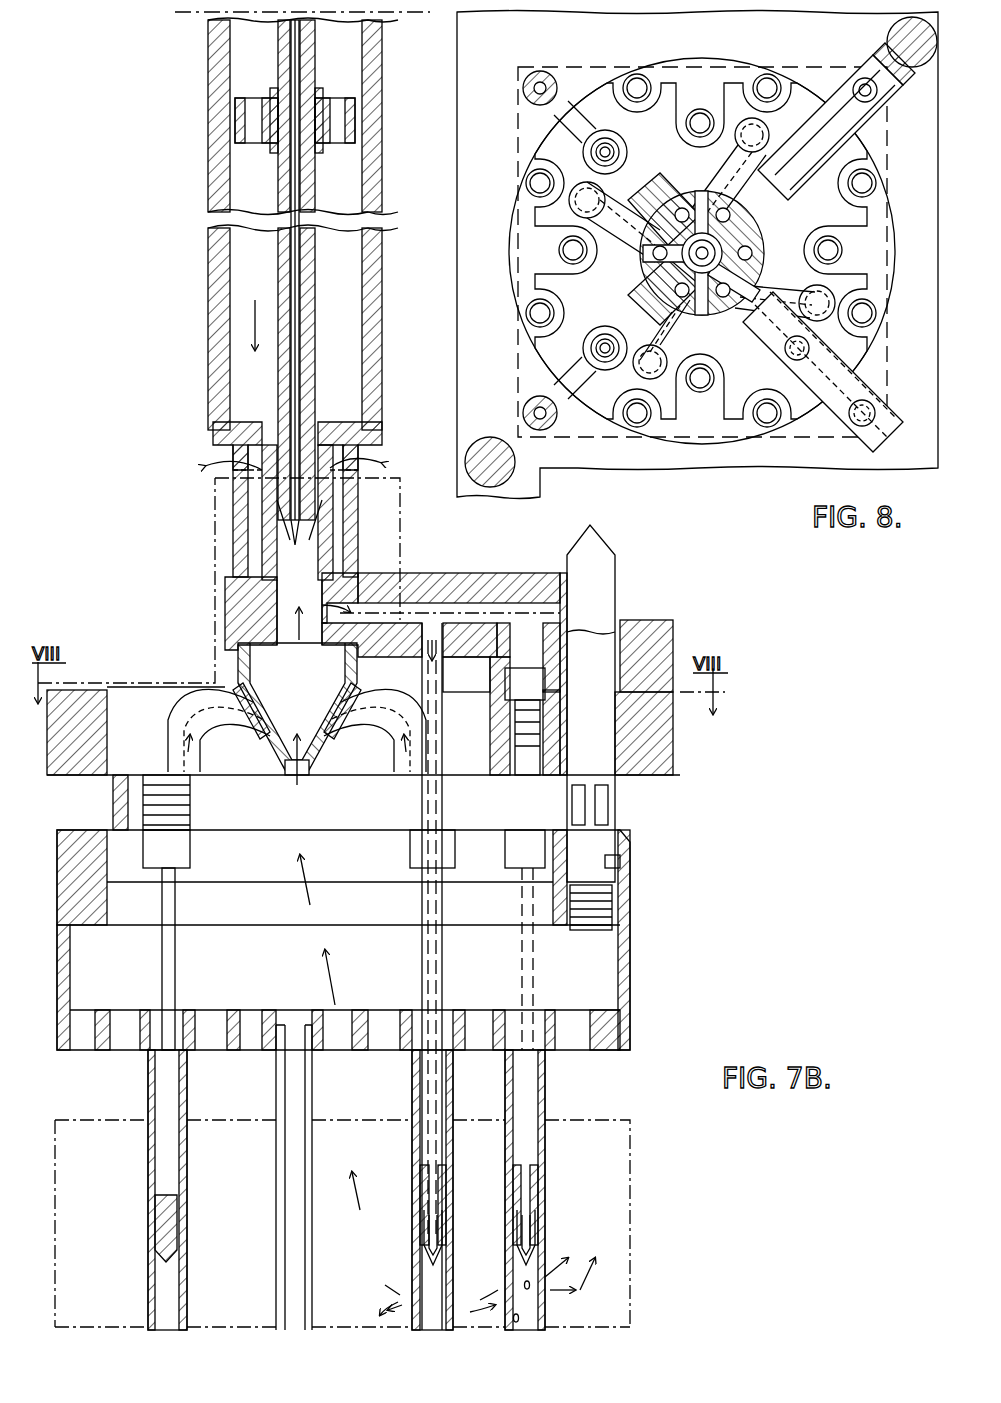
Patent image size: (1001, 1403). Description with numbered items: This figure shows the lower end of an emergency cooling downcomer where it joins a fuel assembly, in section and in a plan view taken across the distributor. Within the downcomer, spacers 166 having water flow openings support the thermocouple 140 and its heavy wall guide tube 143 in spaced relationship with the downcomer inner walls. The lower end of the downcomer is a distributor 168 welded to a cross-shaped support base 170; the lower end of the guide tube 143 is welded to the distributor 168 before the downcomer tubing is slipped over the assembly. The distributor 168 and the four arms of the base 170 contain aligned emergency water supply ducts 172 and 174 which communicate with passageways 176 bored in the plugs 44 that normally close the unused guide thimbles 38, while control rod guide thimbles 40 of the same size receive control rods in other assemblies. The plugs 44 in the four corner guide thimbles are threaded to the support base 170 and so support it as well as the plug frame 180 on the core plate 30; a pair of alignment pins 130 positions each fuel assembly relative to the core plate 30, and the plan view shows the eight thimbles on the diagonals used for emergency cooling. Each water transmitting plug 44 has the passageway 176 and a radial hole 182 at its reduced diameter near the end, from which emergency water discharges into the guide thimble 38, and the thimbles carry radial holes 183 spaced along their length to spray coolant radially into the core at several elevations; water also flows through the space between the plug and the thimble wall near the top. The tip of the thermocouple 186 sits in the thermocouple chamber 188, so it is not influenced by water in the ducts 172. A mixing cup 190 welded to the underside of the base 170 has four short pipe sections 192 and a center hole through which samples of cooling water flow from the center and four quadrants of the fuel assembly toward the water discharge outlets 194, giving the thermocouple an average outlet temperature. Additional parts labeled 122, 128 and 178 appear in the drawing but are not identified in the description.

In FIG. 7B, the core support plate 30 is at (660, 748).
In FIG. 7B, the guide thimbles 38 is at (187, 1150).
In FIG. 7B, the control rod guide thimbles 40 is at (443, 975).
In FIG. 7B, the plugs 44 is at (170, 1178).
In FIG. 7B, the outer tube 122 is at (382, 292).
In FIG. 7B, the flow 128 is at (548, 1273).
In FIG. 7B, the alignment pins 130 is at (605, 573).
In FIG. 8, the alignment pins 130 is at (890, 40).
In FIG. 7B, the thermocouple 140 is at (300, 60).
In FIG. 7B, the guide tube 143 is at (308, 195).
In FIG. 7B, the spacers 166 is at (355, 118).
In FIG. 7B, the distributor 168 is at (236, 456).
In FIG. 8, the distributor 168 is at (935, 347).
In FIG. 7B, the cross-shaped support base 170 is at (527, 575).
In FIG. 8, the cross-shaped support base 170 is at (885, 418).
In FIG. 7B, the emergency water supply ducts 172 is at (250, 430).
In FIG. 7B, the emergency water supply ducts 174 is at (440, 605).
In FIG. 7B, the passageways 176 is at (440, 672).
In FIG. 7B, the bolt 178 is at (505, 862).
In FIG. 7B, the plug frame 180 is at (113, 800).
In FIG. 7B, the radial hole 182 is at (517, 1228).
In FIG. 7B, the radial holes 183 is at (410, 1297).
In FIG. 7B, the tip of the thermocouple 186 is at (297, 548).
In FIG. 7B, the thermocouple chamber 188 is at (296, 650).
In FIG. 7B, the mixing cup 190 is at (276, 770).
In FIG. 7B, the short pipe sections 192 is at (203, 738).
In FIG. 7B, the water discharge outlets 194 is at (245, 494).